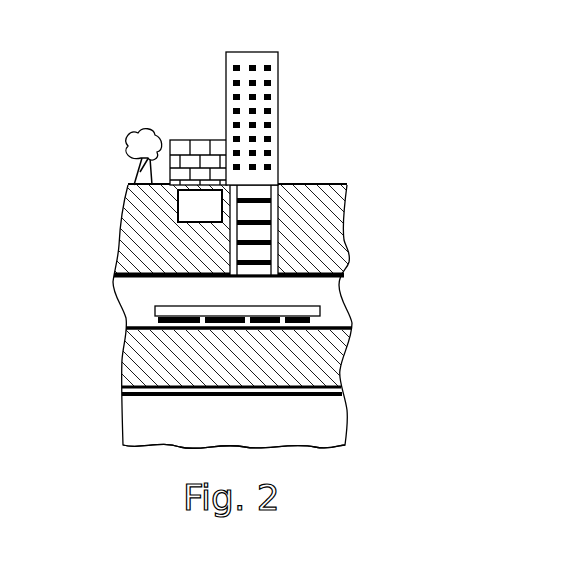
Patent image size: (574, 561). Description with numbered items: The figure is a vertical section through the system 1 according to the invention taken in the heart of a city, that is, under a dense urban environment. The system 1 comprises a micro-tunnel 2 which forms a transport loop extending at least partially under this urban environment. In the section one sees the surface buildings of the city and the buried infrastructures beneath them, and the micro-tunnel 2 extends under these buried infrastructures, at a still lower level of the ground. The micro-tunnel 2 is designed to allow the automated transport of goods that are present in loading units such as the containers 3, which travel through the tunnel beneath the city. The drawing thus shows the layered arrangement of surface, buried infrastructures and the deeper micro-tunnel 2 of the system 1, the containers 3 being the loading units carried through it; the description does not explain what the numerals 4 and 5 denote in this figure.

The system 1 is at (348, 388).
The micro-tunnel 2 is at (140, 391).
The containers 3 is at (162, 396).
The top soil layer 4 is at (136, 293).
The building 5 is at (226, 78).